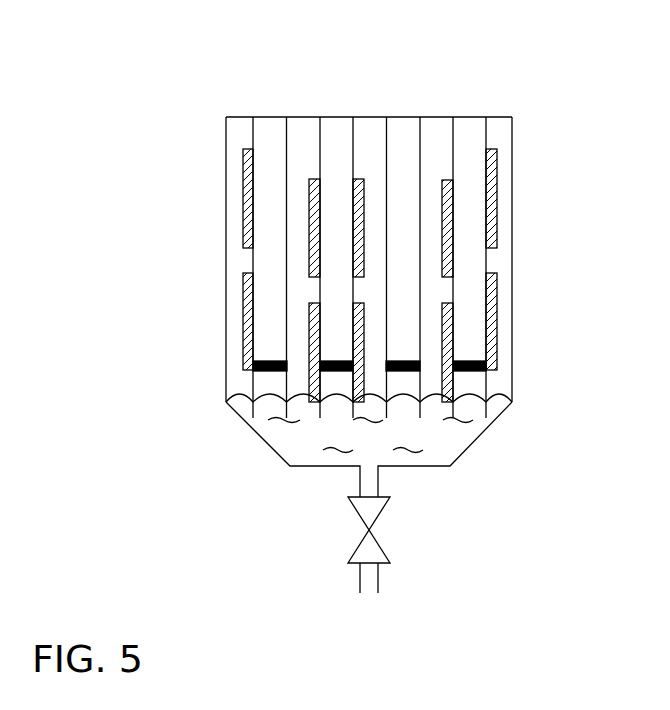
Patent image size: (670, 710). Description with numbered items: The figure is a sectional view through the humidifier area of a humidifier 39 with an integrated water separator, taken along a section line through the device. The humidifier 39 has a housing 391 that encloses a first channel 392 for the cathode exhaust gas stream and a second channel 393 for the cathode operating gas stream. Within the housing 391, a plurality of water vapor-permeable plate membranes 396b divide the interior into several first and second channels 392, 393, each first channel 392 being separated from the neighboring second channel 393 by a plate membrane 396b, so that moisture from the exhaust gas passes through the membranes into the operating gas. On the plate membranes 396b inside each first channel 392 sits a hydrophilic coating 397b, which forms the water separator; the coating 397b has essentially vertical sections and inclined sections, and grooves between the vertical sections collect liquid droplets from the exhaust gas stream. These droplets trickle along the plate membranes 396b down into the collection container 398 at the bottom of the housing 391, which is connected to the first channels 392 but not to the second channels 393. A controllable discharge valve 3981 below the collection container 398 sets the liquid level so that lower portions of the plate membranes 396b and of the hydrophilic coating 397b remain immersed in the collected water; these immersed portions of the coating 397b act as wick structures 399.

The humidifier 39 is at (196, 119).
The housing 391 is at (227, 175).
The first channel 392 is at (502, 179).
The second channel 393 is at (271, 164).
The water vapor-permeable plate membrane 396b is at (485, 136).
The hydrophilic coating 397b is at (495, 225).
The collection container 398 is at (269, 443).
The wick structure 399 is at (486, 410).
The controllable discharge valve 3981 is at (378, 545).